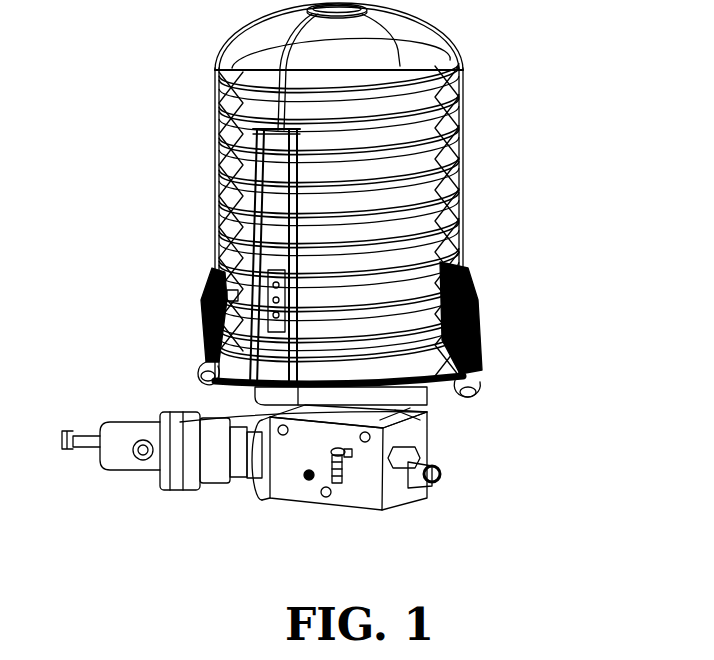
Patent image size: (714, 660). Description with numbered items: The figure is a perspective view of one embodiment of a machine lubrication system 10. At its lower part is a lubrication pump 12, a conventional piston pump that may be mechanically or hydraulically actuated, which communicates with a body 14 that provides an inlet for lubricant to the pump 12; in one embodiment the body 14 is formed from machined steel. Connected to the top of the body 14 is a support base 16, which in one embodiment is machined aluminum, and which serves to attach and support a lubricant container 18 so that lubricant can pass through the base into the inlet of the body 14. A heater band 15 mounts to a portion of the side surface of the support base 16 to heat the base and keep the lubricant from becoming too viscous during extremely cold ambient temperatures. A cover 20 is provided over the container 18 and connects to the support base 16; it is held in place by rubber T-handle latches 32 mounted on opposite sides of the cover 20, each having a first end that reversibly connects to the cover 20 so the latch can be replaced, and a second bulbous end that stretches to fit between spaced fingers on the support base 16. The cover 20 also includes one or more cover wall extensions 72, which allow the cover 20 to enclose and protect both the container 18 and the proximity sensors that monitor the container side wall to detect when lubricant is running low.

The machine lubrication system 10 is at (508, 72).
The lubrication pump 12 is at (134, 492).
The body 14 is at (283, 487).
The heater band 15 is at (290, 396).
The support base 16 is at (425, 425).
The lubricant container 18 is at (237, 113).
The cover 20 is at (463, 170).
The T-handle latch 32 is at (203, 375).
The cover wall extension 72 is at (256, 225).